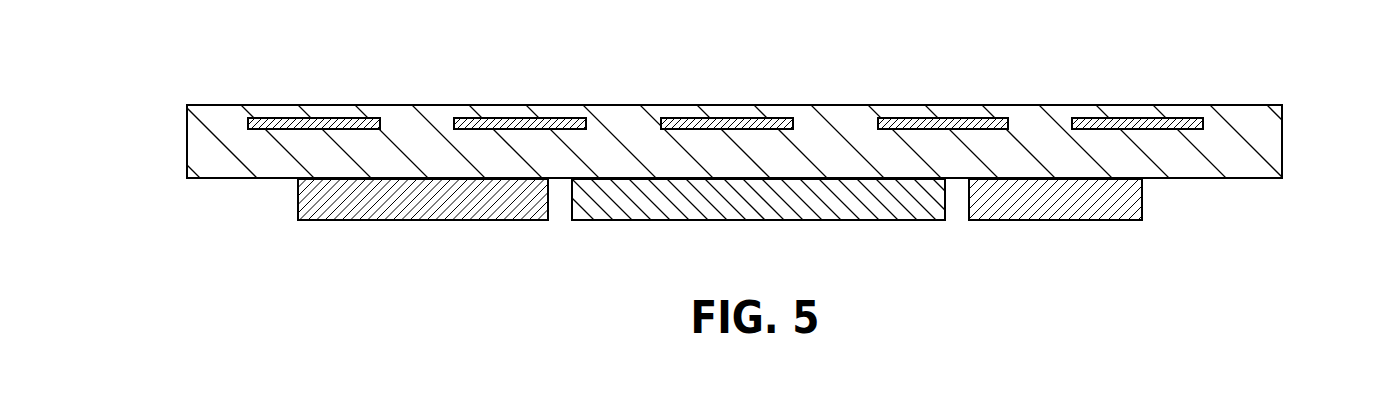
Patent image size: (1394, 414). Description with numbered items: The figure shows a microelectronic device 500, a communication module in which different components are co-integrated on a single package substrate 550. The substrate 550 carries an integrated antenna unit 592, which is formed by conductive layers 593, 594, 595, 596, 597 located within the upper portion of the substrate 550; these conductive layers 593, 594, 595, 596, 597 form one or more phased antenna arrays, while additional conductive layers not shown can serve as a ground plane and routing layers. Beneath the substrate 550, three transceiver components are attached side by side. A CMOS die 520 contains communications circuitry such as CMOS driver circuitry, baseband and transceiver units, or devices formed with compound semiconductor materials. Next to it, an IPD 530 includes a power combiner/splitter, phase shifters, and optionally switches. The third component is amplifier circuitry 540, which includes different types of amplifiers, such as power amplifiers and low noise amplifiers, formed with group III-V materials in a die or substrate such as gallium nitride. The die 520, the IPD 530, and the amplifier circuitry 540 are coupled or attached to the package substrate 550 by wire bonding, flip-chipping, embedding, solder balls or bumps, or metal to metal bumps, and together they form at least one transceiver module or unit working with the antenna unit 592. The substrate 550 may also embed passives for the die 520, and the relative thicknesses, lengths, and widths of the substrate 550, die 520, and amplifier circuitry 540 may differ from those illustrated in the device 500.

The microelectronic device 500 is at (731, 26).
The integrated antenna unit 592 is at (158, 136).
The substrate 550 is at (1282, 123).
The conductive layer 593 is at (320, 122).
The conductive layer 594 is at (517, 122).
The conductive layer 595 is at (710, 122).
The conductive layer 596 is at (942, 122).
The conductive layer 597 is at (1115, 122).
The CMOS die 520 is at (338, 220).
The IPD 530 is at (667, 220).
The amplifier circuitry 540 is at (1037, 220).